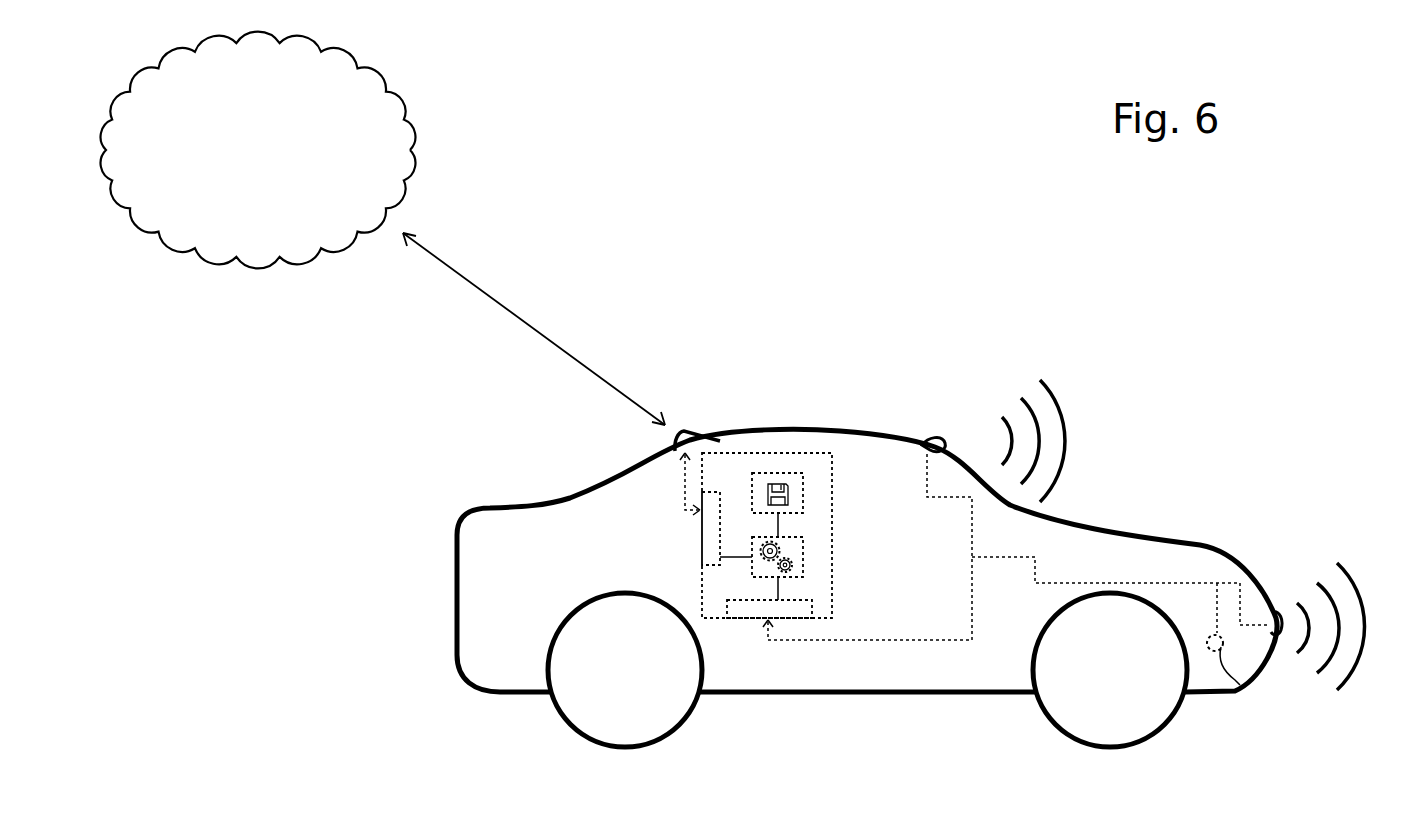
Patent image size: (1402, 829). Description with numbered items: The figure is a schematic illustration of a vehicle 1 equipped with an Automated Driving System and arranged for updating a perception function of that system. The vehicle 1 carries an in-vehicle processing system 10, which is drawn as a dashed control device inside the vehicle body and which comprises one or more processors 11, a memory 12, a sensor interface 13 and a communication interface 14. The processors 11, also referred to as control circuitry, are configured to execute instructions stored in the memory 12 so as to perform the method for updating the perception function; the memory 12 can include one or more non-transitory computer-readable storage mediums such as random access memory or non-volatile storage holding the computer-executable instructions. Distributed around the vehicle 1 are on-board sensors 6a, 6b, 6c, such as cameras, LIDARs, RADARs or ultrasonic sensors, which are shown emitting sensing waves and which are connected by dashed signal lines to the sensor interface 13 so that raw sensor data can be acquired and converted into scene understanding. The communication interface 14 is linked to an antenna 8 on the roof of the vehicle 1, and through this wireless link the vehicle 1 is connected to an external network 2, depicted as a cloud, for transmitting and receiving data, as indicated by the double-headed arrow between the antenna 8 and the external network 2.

The vehicle 1 is at (477, 690).
The external network 2 is at (394, 104).
The on-board sensor 6a is at (1242, 688).
The on-board sensor 6b is at (1272, 614).
The on-board sensor 6c is at (940, 434).
The antenna / communication interface 8 is at (688, 432).
The in-vehicle processing system 10 is at (757, 453).
The processor 11 is at (805, 557).
The memory 12 is at (777, 473).
The sensor interface 13 is at (752, 612).
The communication interface 14 is at (706, 540).